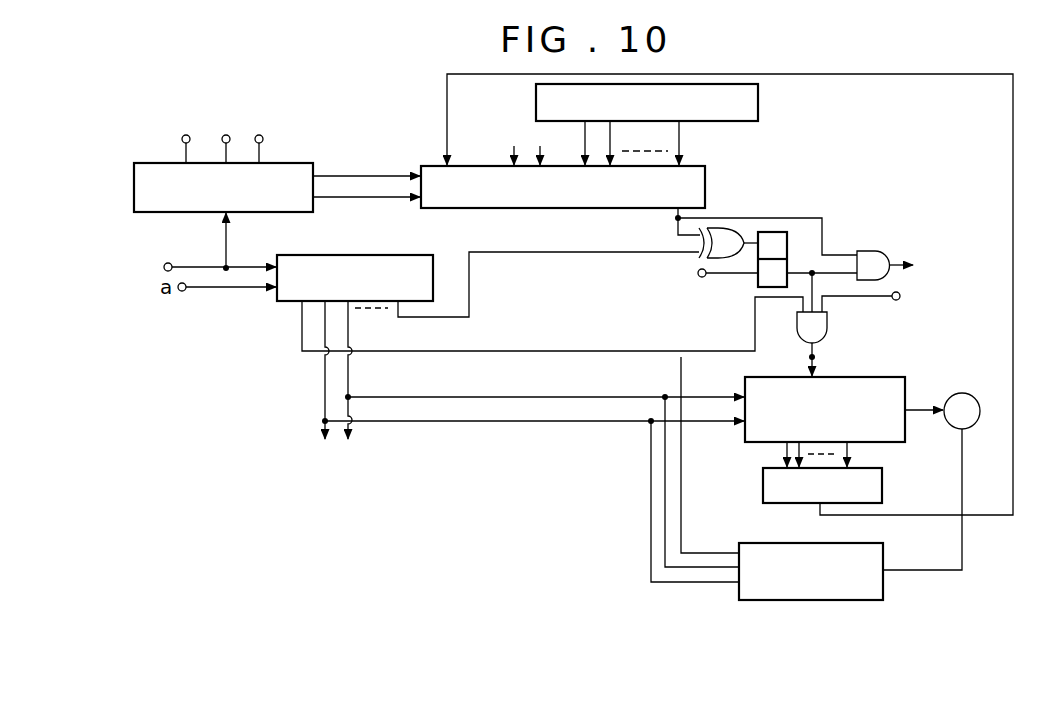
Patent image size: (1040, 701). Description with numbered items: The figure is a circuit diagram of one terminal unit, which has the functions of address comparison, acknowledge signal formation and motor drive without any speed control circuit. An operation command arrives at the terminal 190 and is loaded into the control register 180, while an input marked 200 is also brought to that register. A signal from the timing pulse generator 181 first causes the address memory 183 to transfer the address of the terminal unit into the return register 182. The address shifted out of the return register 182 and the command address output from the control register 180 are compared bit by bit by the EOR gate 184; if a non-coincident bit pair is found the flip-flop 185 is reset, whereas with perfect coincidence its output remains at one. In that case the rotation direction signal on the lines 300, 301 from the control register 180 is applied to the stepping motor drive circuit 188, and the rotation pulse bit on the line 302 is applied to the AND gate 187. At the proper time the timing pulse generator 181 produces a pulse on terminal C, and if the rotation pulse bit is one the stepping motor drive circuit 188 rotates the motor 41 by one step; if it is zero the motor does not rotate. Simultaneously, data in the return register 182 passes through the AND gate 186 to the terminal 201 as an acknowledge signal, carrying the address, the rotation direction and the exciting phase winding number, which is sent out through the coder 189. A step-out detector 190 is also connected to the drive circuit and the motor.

The control register 180 is at (352, 255).
The timing pulse generator 181 is at (134, 180).
The return register 182 is at (619, 209).
The address memory 183 is at (760, 107).
The EOR gate 184 is at (730, 228).
The flip-flop 185 is at (781, 232).
The AND gate 186 is at (875, 251).
The AND gate 187 is at (829, 326).
The stepping motor drive circuit 188 is at (877, 378).
The coder 189 is at (761, 487).
The terminal 190 is at (747, 542).
The start signal line 200 is at (202, 265).
The terminal 201 is at (915, 264).
The line 300 is at (514, 397).
The line 301 is at (522, 423).
The line 302 is at (562, 350).
The motor 41 is at (967, 392).